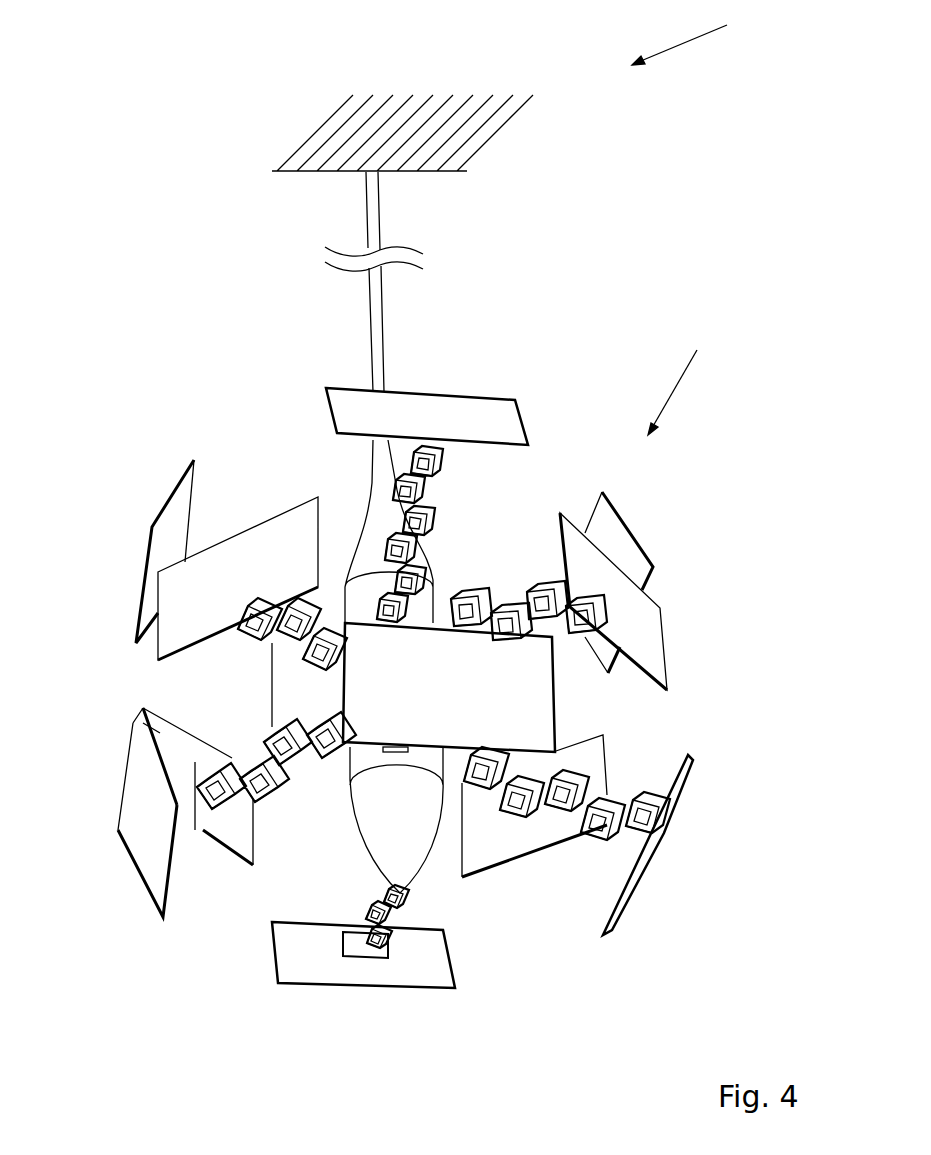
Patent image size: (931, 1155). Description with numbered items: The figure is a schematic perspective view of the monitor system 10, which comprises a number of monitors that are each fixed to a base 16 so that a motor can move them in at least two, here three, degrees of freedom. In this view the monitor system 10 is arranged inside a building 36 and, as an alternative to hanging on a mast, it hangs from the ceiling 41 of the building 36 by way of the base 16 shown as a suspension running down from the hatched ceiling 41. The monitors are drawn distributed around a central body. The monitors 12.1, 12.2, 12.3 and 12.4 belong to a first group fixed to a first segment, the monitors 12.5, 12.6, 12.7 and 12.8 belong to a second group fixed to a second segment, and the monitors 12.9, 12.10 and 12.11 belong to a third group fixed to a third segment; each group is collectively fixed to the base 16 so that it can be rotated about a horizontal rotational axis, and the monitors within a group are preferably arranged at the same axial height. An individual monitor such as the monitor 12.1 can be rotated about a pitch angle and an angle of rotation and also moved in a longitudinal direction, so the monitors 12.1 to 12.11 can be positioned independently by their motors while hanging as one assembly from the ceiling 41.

The building 36 is at (697, 36).
The ceiling 41 is at (333, 127).
The base 16 is at (383, 358).
The monitor system 10 is at (529, 606).
The monitor 12.1 is at (133, 853).
The monitor 12.2 is at (449, 687).
The monitor 12.3 is at (593, 767).
The monitor 12.4 is at (423, 983).
The monitor 12.5 is at (252, 583).
The monitor 12.6 is at (559, 601).
The monitor 12.7 is at (290, 692).
The monitor 12.8 is at (143, 723).
The monitor 12.9 is at (168, 525).
The monitor 12.10 is at (427, 505).
The monitor 12.11 is at (628, 558).